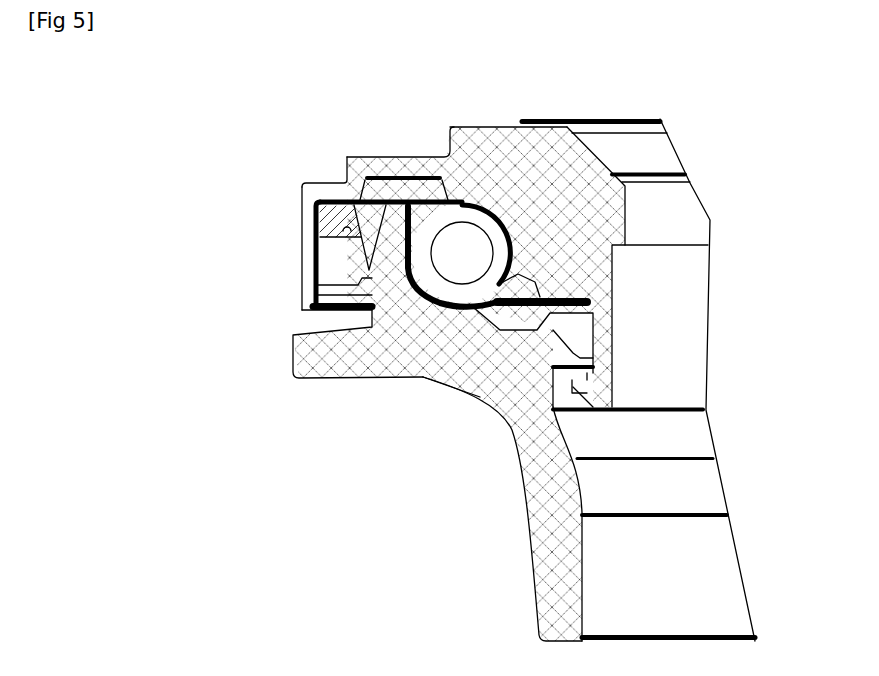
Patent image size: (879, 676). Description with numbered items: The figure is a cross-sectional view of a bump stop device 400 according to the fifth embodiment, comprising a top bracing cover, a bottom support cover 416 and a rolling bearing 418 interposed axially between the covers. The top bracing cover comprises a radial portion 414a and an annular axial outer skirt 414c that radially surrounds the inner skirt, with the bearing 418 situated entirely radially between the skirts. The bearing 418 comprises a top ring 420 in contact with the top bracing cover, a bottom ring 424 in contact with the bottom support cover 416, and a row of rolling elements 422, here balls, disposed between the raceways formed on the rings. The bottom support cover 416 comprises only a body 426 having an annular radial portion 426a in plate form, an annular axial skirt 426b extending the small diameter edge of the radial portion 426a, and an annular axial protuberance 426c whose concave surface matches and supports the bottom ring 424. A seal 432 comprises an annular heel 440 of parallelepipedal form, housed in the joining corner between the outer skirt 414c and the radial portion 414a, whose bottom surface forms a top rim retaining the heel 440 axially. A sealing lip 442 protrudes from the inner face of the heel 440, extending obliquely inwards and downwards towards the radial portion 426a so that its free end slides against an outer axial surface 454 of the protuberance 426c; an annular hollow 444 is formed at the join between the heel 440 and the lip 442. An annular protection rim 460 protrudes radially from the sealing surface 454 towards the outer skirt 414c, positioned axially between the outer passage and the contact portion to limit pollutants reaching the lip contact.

The device 400 is at (726, 198).
The radial portion 414a is at (463, 147).
The annular axial outer skirt 414c is at (302, 293).
The bottom support cover 416 is at (530, 603).
The rolling bearing 418 is at (448, 214).
The top ring 420 is at (505, 218).
The rolling elements 422 is at (462, 253).
The bottom ring 424 is at (417, 200).
The body 426 is at (449, 499).
The annular radial portion 426a is at (405, 368).
The annular axial skirt 426b is at (530, 553).
The annular axial protuberance 426c is at (345, 156).
The seal 432 is at (328, 195).
The annular heel 440 is at (317, 208).
The sealing lip 442 is at (318, 262).
The annular hollow 444 is at (350, 237).
The outer axial surface 454 is at (390, 277).
The annular protection rim 460 is at (367, 300).